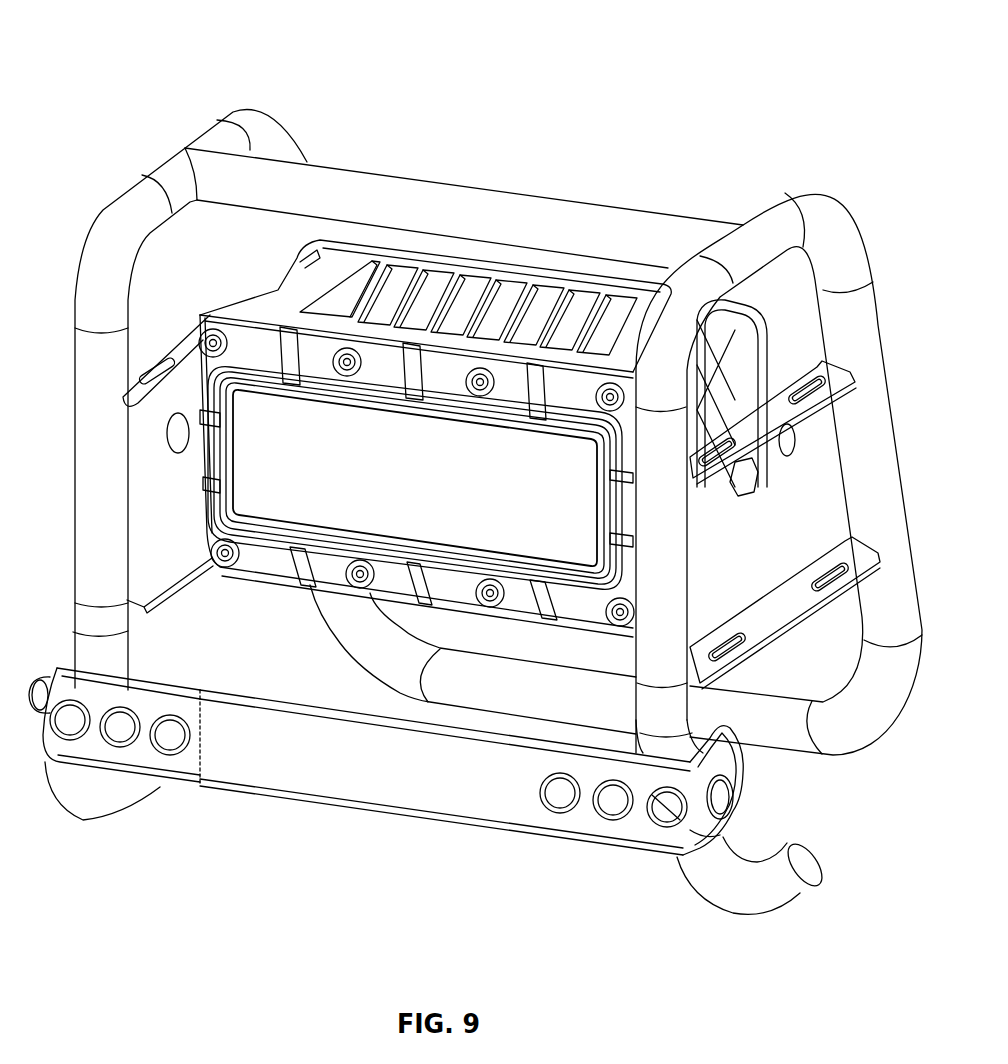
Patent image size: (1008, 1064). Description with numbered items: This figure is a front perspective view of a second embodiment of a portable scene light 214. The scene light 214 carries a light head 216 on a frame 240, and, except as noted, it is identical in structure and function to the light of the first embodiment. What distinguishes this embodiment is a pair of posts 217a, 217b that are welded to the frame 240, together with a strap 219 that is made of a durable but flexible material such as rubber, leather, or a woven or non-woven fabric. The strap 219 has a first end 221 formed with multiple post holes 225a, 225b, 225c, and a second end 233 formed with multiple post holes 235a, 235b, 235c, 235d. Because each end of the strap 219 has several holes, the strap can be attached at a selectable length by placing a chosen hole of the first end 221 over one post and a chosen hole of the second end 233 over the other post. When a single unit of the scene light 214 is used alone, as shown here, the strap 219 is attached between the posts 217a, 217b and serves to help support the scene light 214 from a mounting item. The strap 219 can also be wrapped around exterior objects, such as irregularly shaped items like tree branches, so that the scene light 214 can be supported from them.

The scene light 214 is at (120, 54).
The frame 240 is at (820, 210).
The light head 216 is at (360, 510).
The first end 221 is at (80, 688).
The strap 219 is at (370, 790).
The post hole 225a is at (170, 757).
The post hole 225b is at (117, 757).
The post hole 225c is at (60, 748).
The post hole 235a is at (557, 813).
The post hole 235b is at (610, 817).
The post hole 235c is at (657, 837).
The post hole 235d is at (727, 827).
The post 217a is at (27, 700).
The post 217b is at (727, 792).
The second end 233 is at (693, 835).